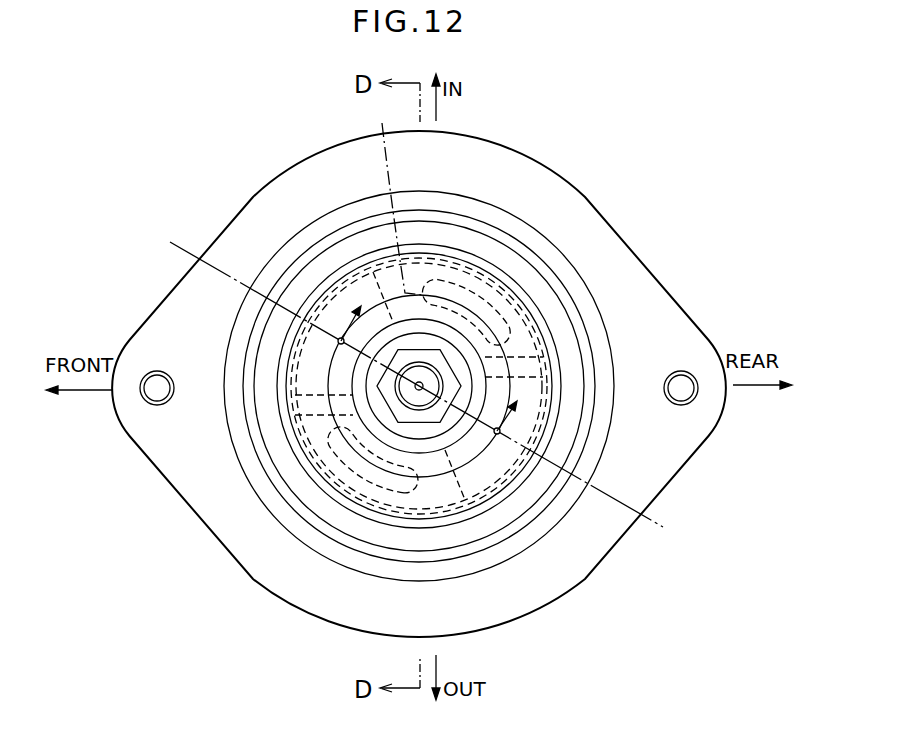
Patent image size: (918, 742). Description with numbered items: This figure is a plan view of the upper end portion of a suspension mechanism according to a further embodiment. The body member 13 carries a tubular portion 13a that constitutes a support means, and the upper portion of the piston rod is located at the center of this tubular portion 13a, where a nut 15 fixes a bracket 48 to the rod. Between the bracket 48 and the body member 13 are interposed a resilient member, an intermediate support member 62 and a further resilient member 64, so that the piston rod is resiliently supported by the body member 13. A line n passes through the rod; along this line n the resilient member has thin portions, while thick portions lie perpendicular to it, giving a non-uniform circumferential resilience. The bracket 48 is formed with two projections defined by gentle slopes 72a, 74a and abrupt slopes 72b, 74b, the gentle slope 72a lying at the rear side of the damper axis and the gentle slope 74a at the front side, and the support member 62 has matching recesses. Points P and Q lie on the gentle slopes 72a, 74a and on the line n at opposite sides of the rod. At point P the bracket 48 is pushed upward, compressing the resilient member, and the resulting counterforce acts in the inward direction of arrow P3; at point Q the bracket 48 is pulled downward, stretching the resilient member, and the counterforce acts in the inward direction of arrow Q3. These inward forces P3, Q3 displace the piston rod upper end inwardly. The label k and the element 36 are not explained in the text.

The body member 13 is at (668, 460).
The tubular portion 13a is at (565, 272).
The nut 15 is at (427, 372).
The inner ring 36 is at (483, 333).
The bracket 48 is at (580, 573).
The intermediate support member 62 is at (563, 337).
The resilient member 64 is at (523, 345).
The gentle slope 72a is at (523, 420).
The abrupt slope 72b is at (533, 360).
The gentle slope 74a is at (330, 313).
The abrupt slope 74b is at (318, 410).
The line n is at (653, 517).
The section line k is at (397, 198).
The point Q is at (327, 349).
The arrow Q3 is at (359, 310).
The point P is at (501, 445).
The arrow P3 is at (520, 407).